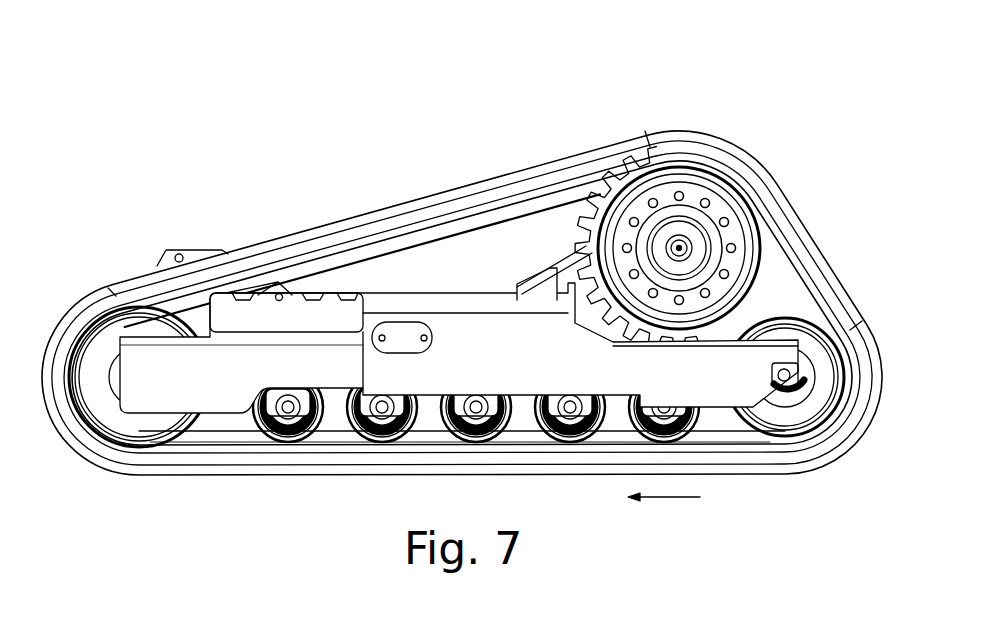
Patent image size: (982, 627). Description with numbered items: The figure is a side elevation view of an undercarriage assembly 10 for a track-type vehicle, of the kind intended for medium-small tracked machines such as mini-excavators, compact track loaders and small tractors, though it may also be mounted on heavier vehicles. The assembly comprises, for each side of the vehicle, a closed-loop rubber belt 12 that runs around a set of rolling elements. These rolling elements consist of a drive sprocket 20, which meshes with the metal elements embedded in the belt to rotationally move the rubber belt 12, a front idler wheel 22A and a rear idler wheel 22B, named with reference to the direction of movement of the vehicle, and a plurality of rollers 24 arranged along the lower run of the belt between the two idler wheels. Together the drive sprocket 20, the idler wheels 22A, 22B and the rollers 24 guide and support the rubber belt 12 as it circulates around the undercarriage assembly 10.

The undercarriage assembly 10 is at (462, 315).
The rubber belt 12 is at (268, 479).
The drive sprocket 20 is at (764, 236).
The front idler wheel 22A is at (145, 451).
The rear idler wheel 22B is at (798, 450).
The rollers 24 is at (382, 443).